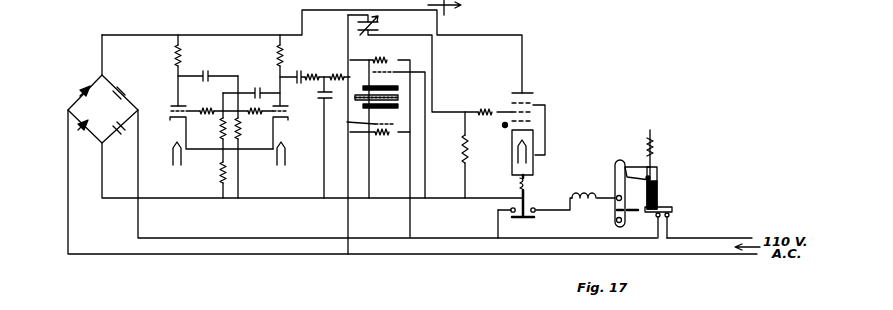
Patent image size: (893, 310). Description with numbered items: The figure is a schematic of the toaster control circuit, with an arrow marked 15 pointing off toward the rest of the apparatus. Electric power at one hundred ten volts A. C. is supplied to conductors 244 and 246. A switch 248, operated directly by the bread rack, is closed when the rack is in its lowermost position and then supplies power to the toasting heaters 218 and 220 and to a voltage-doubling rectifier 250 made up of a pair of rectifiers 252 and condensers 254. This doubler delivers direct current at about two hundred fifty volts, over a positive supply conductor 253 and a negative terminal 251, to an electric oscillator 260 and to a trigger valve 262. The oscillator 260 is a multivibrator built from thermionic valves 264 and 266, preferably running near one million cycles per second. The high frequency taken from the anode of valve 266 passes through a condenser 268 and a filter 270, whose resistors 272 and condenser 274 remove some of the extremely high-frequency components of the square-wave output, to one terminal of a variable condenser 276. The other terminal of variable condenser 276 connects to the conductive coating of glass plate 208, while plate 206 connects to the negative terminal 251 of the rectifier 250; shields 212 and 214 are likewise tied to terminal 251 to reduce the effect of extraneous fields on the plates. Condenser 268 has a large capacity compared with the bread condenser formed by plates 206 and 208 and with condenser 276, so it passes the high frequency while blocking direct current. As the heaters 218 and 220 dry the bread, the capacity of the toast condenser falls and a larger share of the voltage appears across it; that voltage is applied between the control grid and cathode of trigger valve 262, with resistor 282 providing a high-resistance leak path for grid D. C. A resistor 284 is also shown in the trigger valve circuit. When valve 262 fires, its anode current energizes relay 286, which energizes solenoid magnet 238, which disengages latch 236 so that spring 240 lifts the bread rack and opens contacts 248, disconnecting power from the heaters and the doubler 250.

The apparatus 15 is at (455, 7).
The plate 206 is at (381, 112).
The glass plate 208 is at (380, 81).
The shield 212 is at (390, 122).
The shield 214 is at (393, 71).
The toasting heater 218 is at (351, 122).
The toasting heater 220 is at (381, 60).
The latch 236 is at (625, 150).
The solenoid magnet 238 is at (572, 195).
The spring 240 is at (655, 146).
The conductor 244 is at (738, 256).
The conductor 246 is at (744, 238).
The switch 248 is at (668, 206).
The voltage-doubling rectifier 250 is at (118, 115).
The negative terminal 251 is at (292, 198).
The rectifier 252 is at (76, 91).
The conductor 253 is at (232, 35).
The condenser 254 is at (120, 90).
The electric oscillator 260 is at (250, 69).
The trigger valve 262 is at (565, 93).
The thermionic valve 264 is at (170, 116).
The thermionic valve 266 is at (308, 125).
The condenser 268 is at (300, 74).
The filter 270 is at (300, 88).
The resistor 272 is at (320, 79).
The condenser 274 is at (320, 95).
The variable condenser 276 is at (379, 24).
The resistor 282 is at (481, 155).
The resistor 284 is at (498, 84).
The relay 286 is at (525, 175).